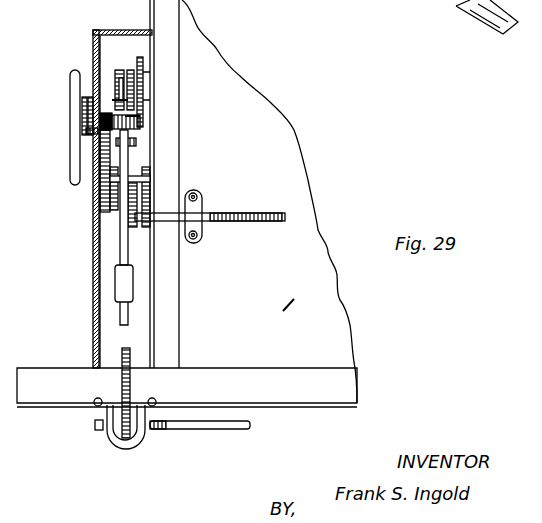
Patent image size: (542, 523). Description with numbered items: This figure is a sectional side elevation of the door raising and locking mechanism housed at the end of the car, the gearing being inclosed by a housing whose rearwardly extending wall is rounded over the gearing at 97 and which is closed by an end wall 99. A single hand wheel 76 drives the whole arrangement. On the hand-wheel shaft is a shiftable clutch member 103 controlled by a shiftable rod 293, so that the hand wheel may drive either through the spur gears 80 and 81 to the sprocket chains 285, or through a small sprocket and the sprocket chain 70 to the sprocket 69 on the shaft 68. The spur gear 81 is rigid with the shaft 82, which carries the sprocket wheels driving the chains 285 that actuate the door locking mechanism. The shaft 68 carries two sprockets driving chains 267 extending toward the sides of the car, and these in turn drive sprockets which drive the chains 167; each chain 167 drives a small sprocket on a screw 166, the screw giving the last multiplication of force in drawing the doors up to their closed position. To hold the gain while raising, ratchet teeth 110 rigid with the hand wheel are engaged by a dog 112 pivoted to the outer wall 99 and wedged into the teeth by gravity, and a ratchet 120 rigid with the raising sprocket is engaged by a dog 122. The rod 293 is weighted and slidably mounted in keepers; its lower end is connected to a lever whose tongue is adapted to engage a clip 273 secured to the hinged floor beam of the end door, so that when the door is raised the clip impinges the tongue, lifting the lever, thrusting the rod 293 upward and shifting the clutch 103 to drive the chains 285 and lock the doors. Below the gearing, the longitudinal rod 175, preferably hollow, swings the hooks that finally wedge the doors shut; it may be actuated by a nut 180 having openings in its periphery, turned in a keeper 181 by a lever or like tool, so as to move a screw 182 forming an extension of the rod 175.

The clip 273 is at (0, 3).
The rounded housing wall 97 is at (134, 34).
The sprocket chains 285 is at (118, 100).
The shaft 82 is at (128, 68).
The spur gear 81 is at (137, 58).
The dog 122 is at (92, 97).
The dog 112 is at (82, 98).
The shiftable clutch member 103 is at (128, 117).
The ratchet 120 is at (80, 129).
The spur gear 80 is at (135, 136).
The ratchet teeth 110 is at (78, 149).
The sprocket chain 70 is at (128, 140).
The hand wheel 76 is at (72, 163).
The sprocket 69 is at (100, 183).
The shaft 68 is at (100, 202).
The chains 267 is at (125, 222).
The chain 167 is at (120, 243).
The shiftable rod 293 is at (120, 250).
The end wall 99 is at (93, 300).
The screw 166 is at (218, 218).
The nut 180 is at (118, 428).
The keeper 181 is at (128, 455).
The screw 182 is at (155, 425).
The rod 175 is at (210, 424).